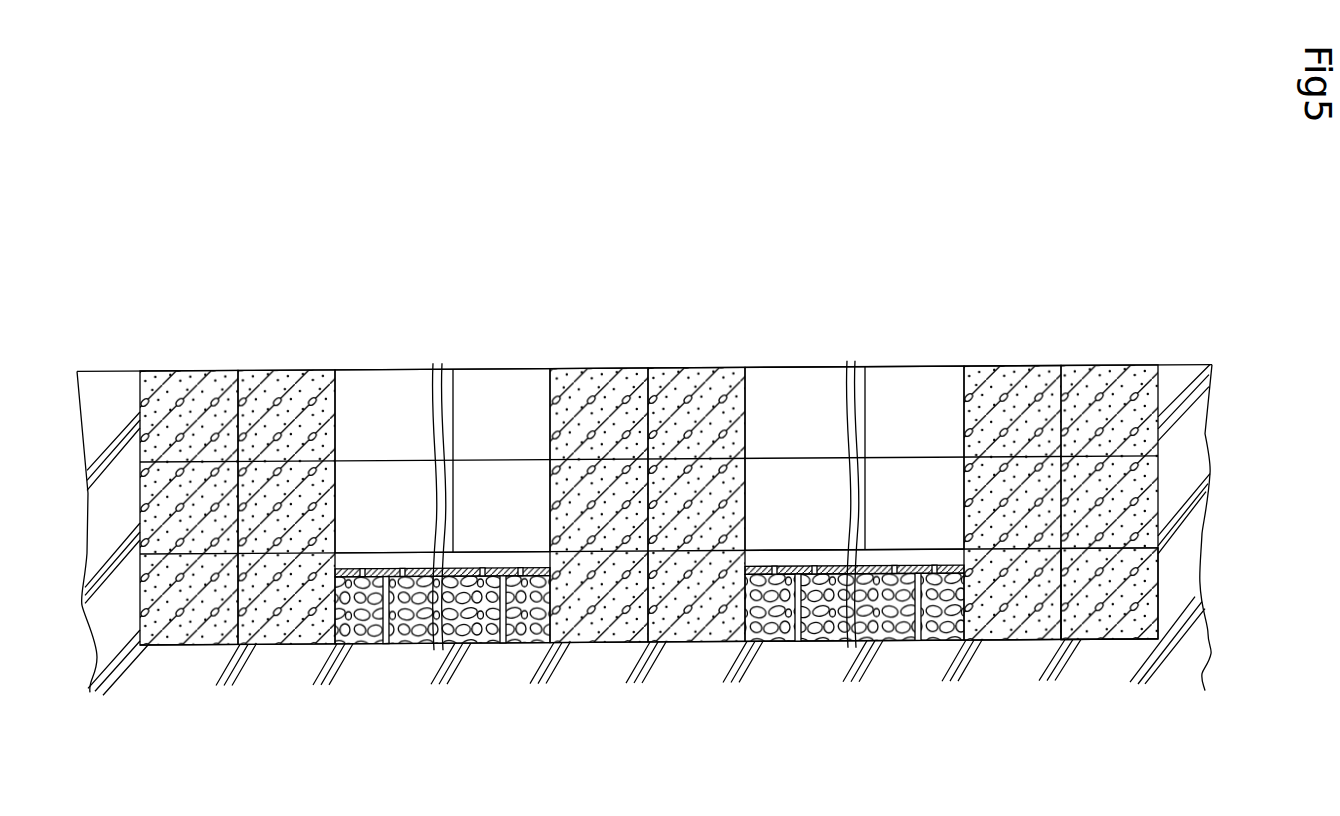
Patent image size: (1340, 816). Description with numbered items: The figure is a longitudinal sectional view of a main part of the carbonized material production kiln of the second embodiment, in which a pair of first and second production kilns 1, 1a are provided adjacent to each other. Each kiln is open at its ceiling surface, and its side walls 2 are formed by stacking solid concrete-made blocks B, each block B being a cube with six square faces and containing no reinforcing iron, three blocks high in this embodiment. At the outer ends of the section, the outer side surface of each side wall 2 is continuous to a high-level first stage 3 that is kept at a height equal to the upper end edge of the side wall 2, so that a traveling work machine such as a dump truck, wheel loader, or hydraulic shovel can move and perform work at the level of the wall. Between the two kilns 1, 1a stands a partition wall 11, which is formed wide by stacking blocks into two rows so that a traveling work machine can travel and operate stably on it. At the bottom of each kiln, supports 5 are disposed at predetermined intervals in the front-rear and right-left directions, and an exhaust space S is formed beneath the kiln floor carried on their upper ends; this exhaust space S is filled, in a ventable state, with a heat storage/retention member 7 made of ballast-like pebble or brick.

The carbonized material production kiln 1 is at (497, 350).
The second production kiln 1a is at (933, 348).
The side wall 2 is at (215, 386).
The first stage 3 is at (108, 370).
The support 5 is at (505, 630).
The heat storage/retention member 7 is at (395, 645).
The partition wall 11 is at (683, 396).
The exhaust space S is at (470, 645).
The block B is at (1117, 606).